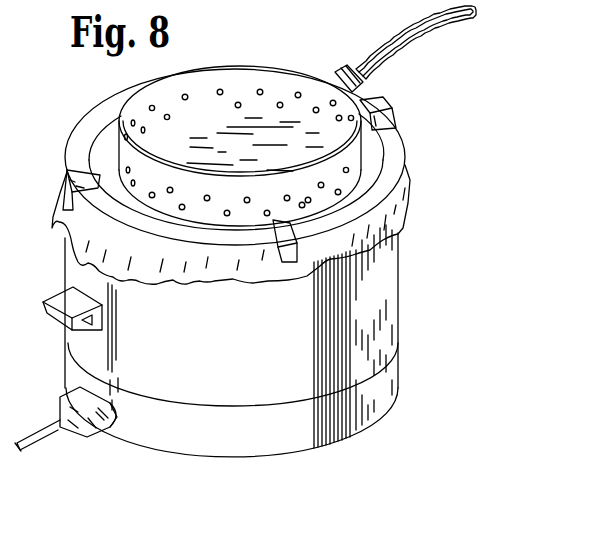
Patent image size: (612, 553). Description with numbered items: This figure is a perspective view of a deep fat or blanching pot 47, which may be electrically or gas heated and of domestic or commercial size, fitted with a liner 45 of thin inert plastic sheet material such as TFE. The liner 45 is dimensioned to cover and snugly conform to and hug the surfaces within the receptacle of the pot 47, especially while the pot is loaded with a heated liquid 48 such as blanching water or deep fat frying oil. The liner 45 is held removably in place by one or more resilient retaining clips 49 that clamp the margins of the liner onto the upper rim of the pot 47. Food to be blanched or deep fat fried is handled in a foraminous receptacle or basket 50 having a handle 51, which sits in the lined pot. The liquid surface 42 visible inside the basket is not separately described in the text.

The liquid 42 is at (255, 85).
The liner 45 is at (389, 210).
The blanching pot or deep fat fryer 47 is at (393, 316).
The heated liquid 48 is at (371, 165).
The resilient retaining clips 49 is at (68, 166).
The foraminous receptacle or basket 50 is at (287, 82).
The handle 51 is at (438, 39).